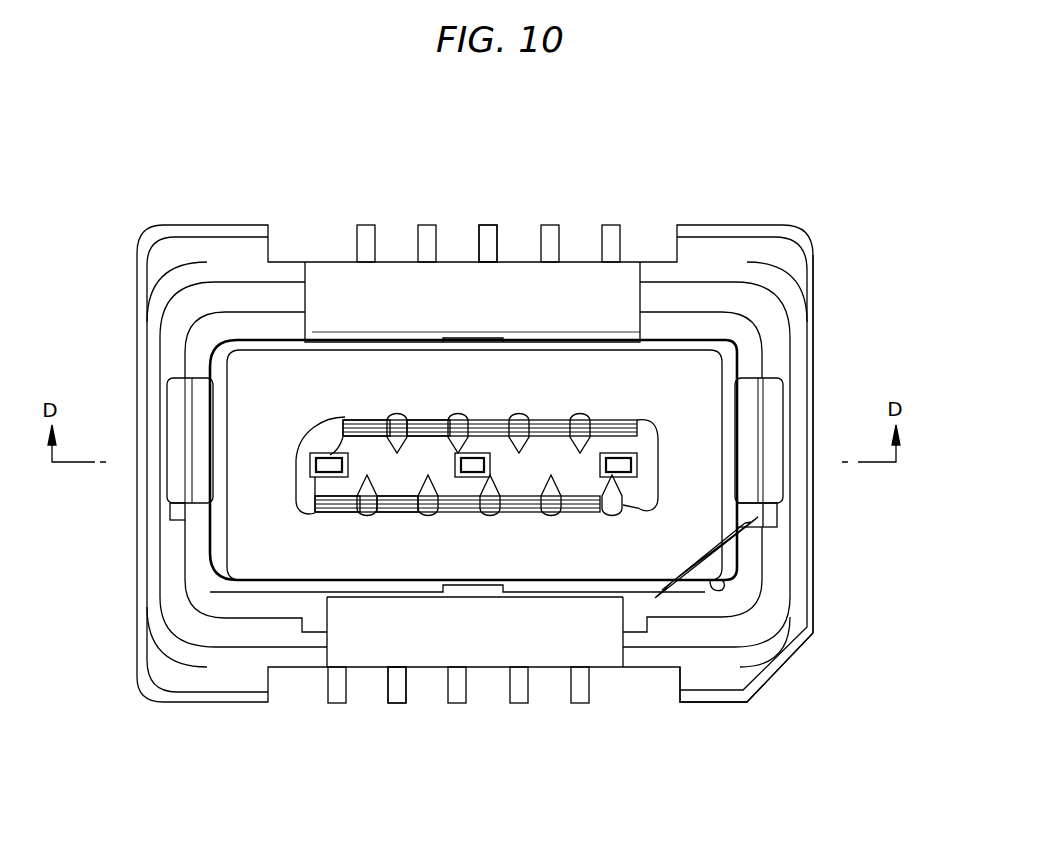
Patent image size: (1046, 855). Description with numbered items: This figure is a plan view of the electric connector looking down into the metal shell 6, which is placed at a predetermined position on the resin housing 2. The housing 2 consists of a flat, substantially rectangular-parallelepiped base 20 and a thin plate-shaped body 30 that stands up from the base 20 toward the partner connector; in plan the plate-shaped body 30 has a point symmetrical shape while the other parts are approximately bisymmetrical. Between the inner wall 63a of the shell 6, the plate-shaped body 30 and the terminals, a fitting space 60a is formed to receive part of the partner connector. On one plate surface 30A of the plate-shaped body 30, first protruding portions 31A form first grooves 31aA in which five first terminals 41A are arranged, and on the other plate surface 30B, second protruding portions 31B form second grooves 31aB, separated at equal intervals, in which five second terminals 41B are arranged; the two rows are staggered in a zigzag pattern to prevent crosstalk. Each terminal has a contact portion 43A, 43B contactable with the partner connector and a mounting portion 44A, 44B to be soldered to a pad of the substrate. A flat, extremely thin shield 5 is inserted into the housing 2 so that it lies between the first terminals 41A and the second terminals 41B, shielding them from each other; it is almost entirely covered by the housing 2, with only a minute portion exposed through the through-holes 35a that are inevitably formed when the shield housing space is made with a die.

The housing 2 is at (927, 507).
The shield 5 is at (627, 482).
The shell 6 is at (717, 252).
The base 20 is at (795, 672).
The plate-shaped body 30 is at (500, 465).
The one plate surface 30A is at (580, 522).
The other plate surface 30B is at (610, 404).
The first protruding portions 31A is at (548, 517).
The second protruding portions 31B is at (397, 423).
The first grooves 31aA is at (462, 518).
The second grooves 31aB is at (542, 425).
The through-holes 35a is at (333, 455).
The first terminals 41A is at (330, 528).
The second terminals 41B is at (366, 404).
The contact portion 43A is at (395, 515).
The contact portion 43B is at (430, 420).
The mounting portion 44A is at (397, 705).
The mounting portion 44B is at (490, 223).
The fitting space 60a is at (277, 388).
The inner wall 63a is at (270, 352).